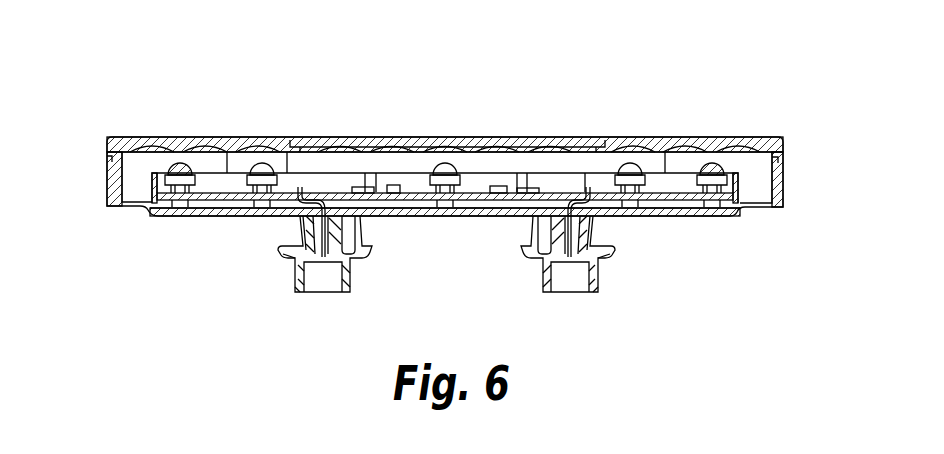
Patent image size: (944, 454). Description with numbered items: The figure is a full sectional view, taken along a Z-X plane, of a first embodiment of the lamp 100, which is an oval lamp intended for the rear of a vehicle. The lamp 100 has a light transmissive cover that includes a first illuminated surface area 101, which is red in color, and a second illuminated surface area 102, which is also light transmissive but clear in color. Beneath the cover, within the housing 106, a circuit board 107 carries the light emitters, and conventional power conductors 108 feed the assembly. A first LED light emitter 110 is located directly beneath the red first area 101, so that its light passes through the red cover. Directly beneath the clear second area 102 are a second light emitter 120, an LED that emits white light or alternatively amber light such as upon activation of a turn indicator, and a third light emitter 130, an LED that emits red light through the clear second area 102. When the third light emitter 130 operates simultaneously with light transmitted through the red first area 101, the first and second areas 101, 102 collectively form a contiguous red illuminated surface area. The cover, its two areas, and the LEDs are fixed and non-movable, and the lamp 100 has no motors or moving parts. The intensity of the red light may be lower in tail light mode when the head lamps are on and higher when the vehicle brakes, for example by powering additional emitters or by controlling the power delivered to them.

The lamp 100 is at (697, 70).
The first illuminated surface area 101 is at (185, 137).
The second illuminated surface area 102 is at (438, 137).
The housing 106 is at (107, 185).
The circuit board 107 is at (668, 205).
The power conductors 108 is at (570, 222).
The first LED light emitter 110 is at (637, 175).
The second light emitter 120 is at (543, 195).
The third light emitter 130 is at (453, 172).